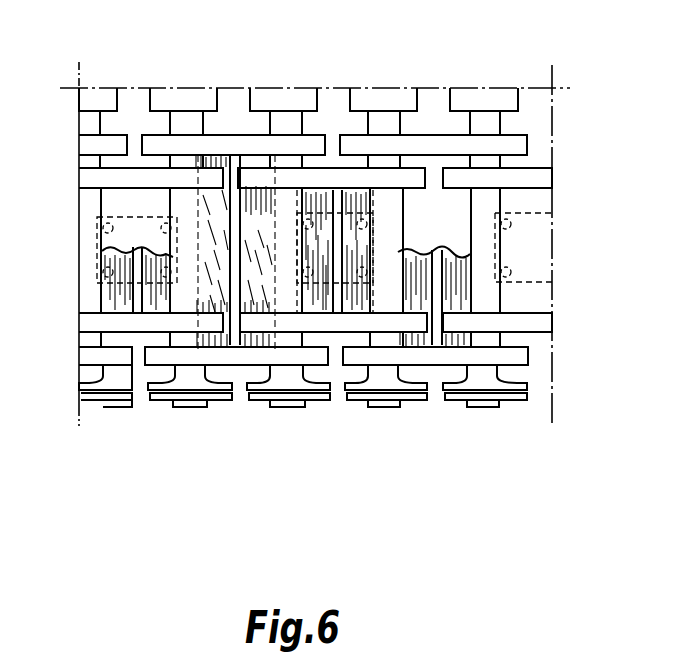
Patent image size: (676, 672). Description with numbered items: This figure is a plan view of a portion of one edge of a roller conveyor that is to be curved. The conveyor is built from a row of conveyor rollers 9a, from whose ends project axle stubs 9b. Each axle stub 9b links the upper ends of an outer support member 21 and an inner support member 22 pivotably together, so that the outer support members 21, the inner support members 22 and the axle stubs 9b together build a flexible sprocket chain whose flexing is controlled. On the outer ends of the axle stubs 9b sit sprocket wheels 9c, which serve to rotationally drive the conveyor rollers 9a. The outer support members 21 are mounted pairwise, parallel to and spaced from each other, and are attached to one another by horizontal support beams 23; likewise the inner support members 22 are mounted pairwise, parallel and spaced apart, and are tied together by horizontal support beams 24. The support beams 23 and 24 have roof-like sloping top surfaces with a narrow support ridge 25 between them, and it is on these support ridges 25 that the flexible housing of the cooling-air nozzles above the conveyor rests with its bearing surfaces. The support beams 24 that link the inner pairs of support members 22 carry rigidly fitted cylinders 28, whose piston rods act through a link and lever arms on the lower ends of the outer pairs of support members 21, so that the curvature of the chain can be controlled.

The conveyor roller 9a is at (190, 97).
The axle stub 9b is at (285, 250).
The sprocket wheel 9c is at (260, 400).
The outer support member 21 is at (157, 145).
The inner support member 22 is at (413, 185).
The horizontal support beam 23 is at (213, 207).
The horizontal support beam 24 is at (330, 215).
The support ridge 25 is at (233, 247).
The cylinder 28 is at (127, 242).